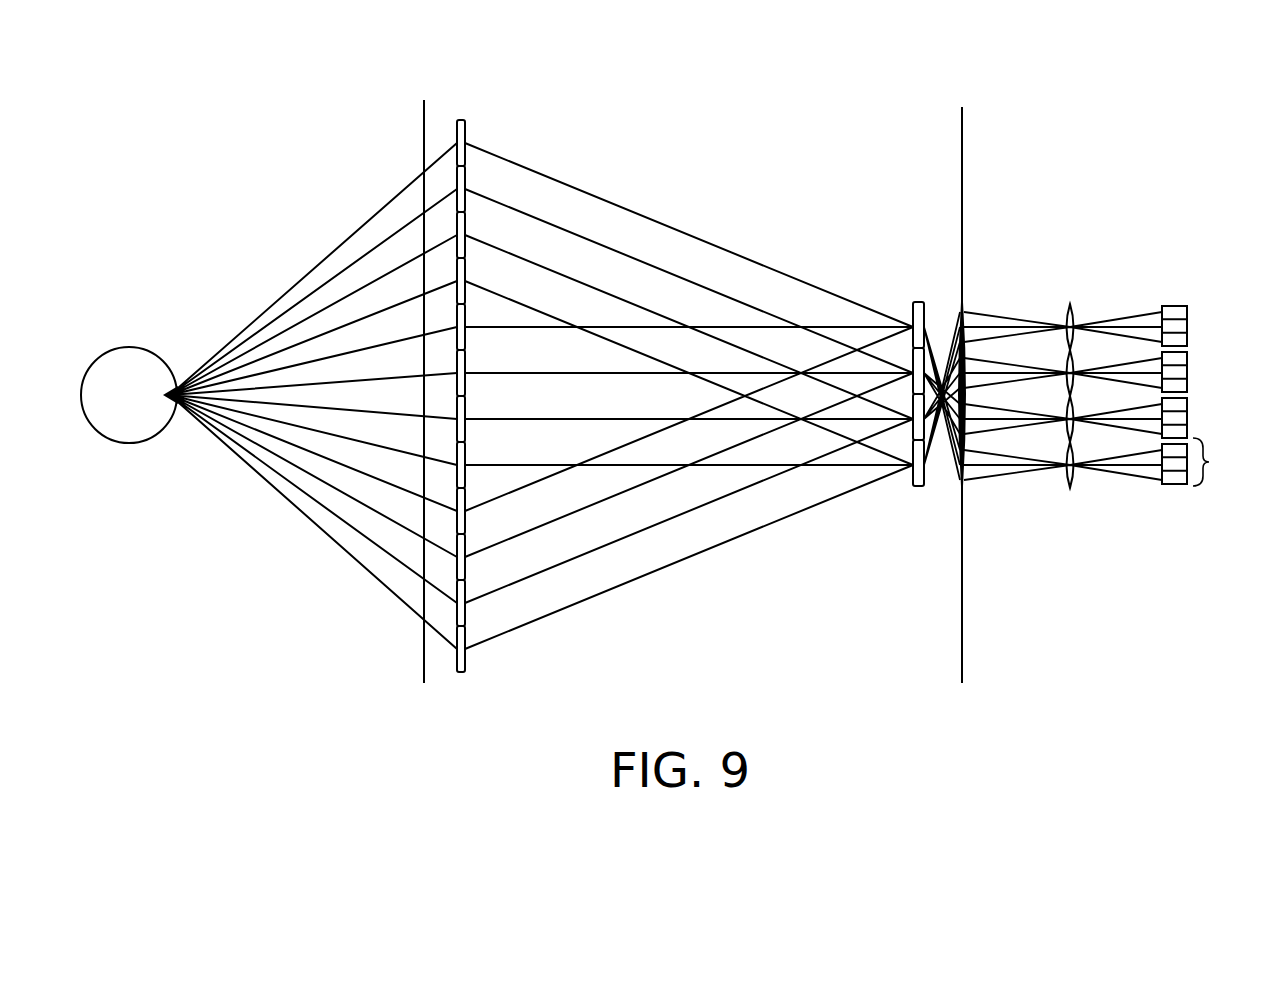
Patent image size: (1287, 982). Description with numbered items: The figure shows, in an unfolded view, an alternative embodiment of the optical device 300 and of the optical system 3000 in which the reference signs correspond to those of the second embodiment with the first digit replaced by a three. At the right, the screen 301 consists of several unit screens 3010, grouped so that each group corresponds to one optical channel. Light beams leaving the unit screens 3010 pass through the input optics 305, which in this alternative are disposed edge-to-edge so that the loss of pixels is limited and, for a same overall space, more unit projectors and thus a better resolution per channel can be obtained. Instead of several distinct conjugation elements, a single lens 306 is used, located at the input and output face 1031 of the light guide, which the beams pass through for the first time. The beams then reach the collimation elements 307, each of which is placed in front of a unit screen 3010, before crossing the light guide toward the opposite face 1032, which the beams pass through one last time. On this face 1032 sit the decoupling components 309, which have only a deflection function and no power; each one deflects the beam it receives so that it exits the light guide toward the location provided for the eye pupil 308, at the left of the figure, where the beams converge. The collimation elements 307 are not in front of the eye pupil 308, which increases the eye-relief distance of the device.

The optical device 300 is at (1048, 128).
The screen 301 is at (1172, 290).
The unit screens 3010 is at (1235, 462).
The input optics 305 is at (1070, 300).
The single lens 306 is at (966, 488).
The collimation elements 307 is at (915, 487).
The eye pupil 308 is at (125, 368).
The decoupling components 309 is at (462, 675).
The input and output face 1031 is at (962, 128).
The opposite face 1032 is at (424, 135).
The optical system 3000 is at (1113, 613).